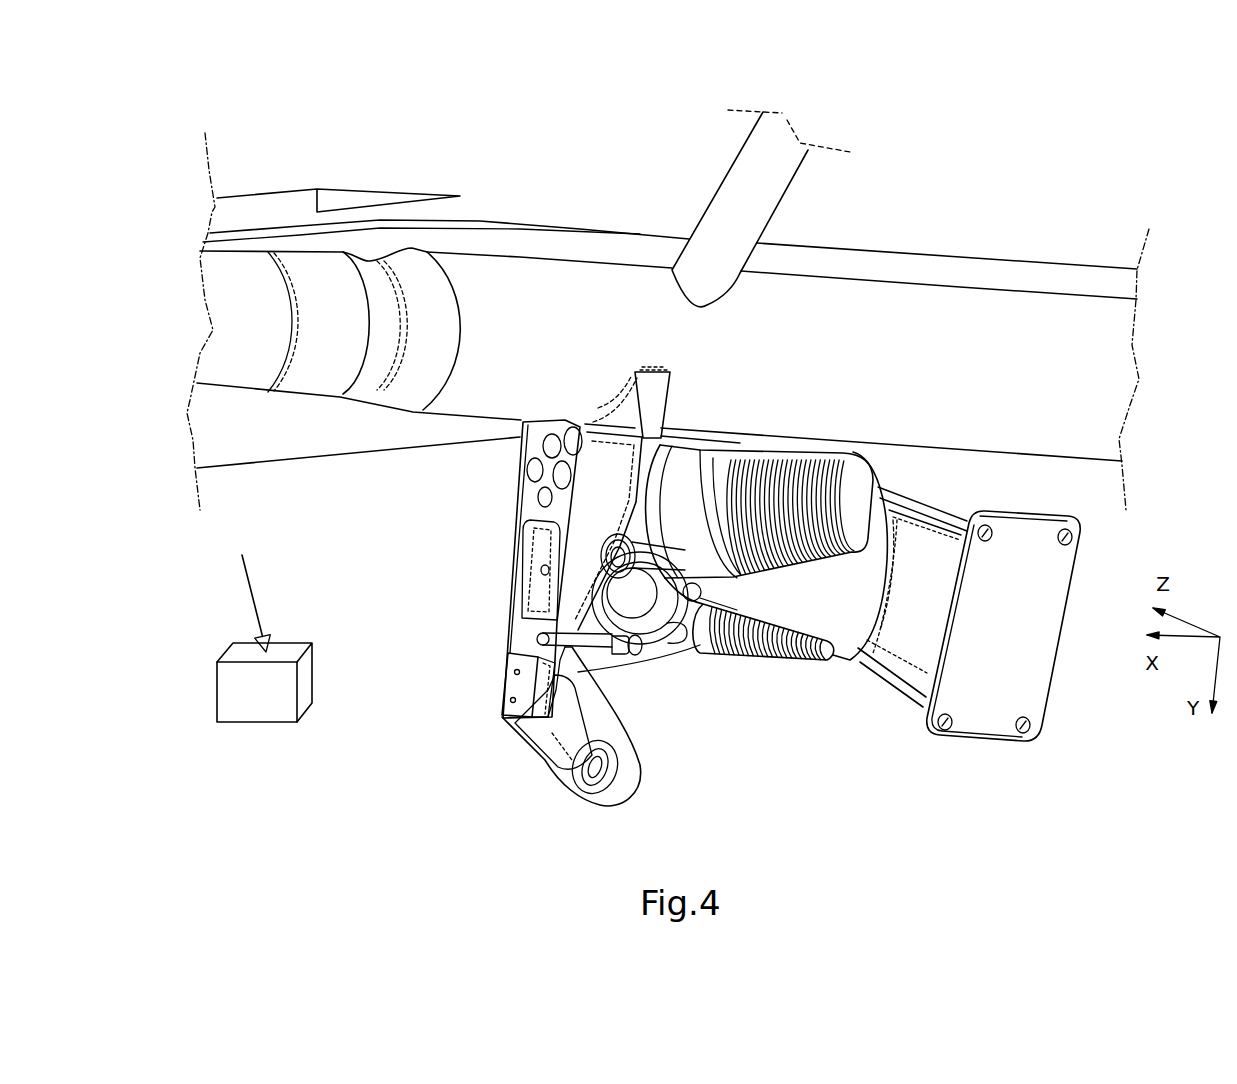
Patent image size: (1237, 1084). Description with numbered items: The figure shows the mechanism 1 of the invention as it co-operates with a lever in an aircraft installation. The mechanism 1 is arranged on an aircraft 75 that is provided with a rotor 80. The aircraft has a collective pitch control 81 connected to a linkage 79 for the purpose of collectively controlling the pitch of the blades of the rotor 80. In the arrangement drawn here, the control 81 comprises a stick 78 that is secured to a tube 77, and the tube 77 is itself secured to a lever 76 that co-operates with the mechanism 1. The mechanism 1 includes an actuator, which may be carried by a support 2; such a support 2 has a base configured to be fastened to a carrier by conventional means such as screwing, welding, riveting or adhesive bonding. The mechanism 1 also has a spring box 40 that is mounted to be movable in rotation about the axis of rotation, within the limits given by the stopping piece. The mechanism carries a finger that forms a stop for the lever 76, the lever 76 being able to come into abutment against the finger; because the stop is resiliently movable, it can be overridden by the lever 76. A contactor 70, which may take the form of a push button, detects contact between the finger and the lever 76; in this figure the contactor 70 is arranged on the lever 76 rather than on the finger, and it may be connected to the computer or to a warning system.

The mechanism 1 is at (976, 778).
The support 2 is at (1032, 688).
The spring box 40 is at (840, 700).
The contactor 70 is at (540, 692).
The aircraft 75 is at (1073, 212).
The lever 76 is at (522, 487).
The tube 77 is at (590, 297).
The stick 78 is at (737, 197).
The linkage 79 is at (249, 589).
The rotor 80 is at (244, 704).
The collective pitch control 81 is at (520, 162).